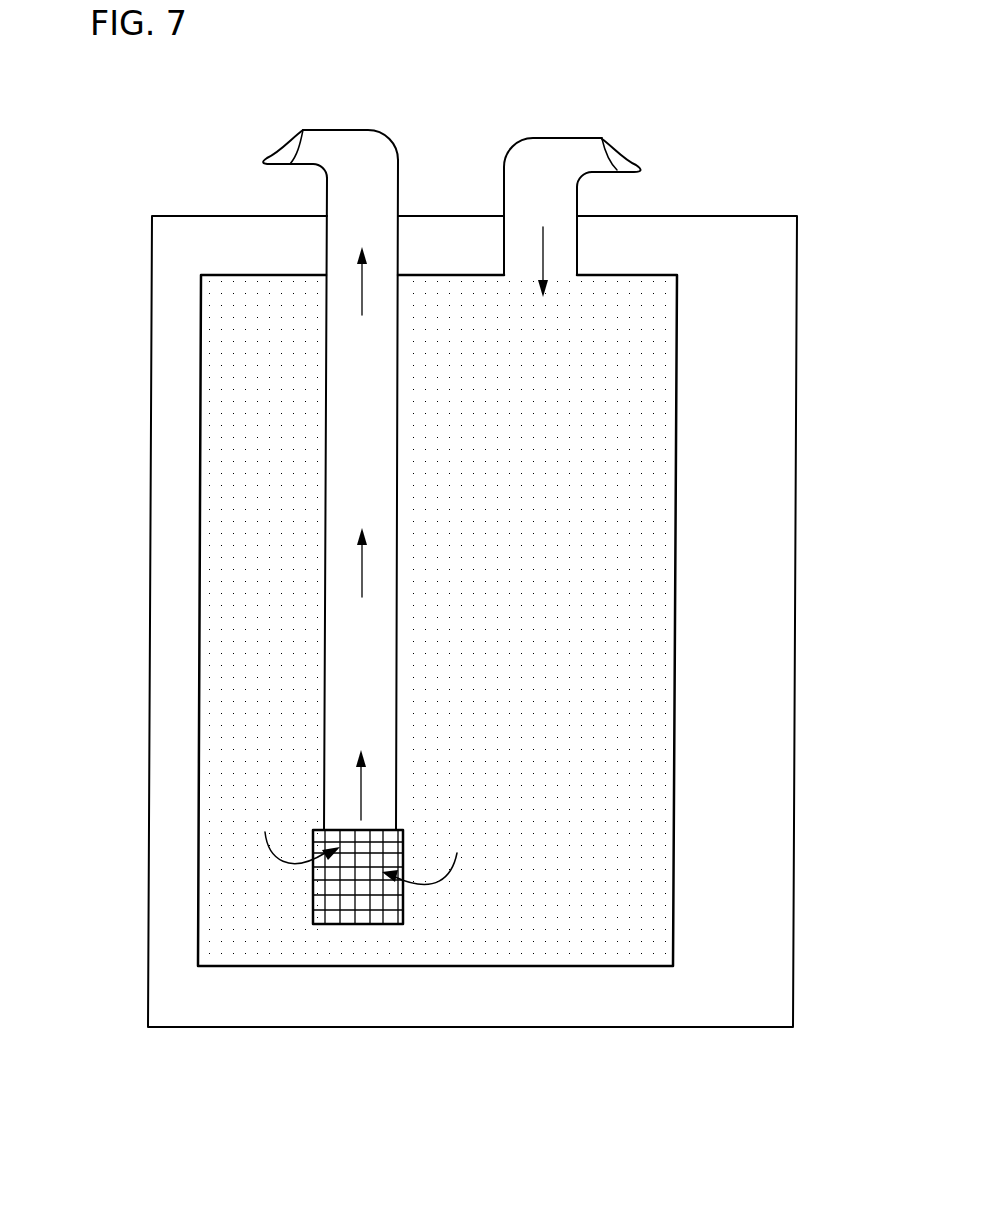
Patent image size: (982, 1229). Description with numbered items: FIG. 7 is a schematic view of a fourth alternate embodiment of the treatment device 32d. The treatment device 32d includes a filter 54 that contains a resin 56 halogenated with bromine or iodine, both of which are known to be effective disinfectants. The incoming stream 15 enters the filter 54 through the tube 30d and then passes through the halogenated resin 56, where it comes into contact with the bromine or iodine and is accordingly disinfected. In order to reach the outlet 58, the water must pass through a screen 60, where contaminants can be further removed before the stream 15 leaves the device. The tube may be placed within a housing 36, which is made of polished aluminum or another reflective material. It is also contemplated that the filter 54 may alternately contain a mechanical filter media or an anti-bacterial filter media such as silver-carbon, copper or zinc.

The stream 15 is at (376, 191).
The tube 30d is at (364, 130).
The treatment device 32d is at (112, 500).
The housing 36 is at (798, 550).
The filter 54 is at (675, 623).
The resin 56 is at (655, 340).
The outlet 58 is at (355, 685).
The screen 60 is at (347, 873).